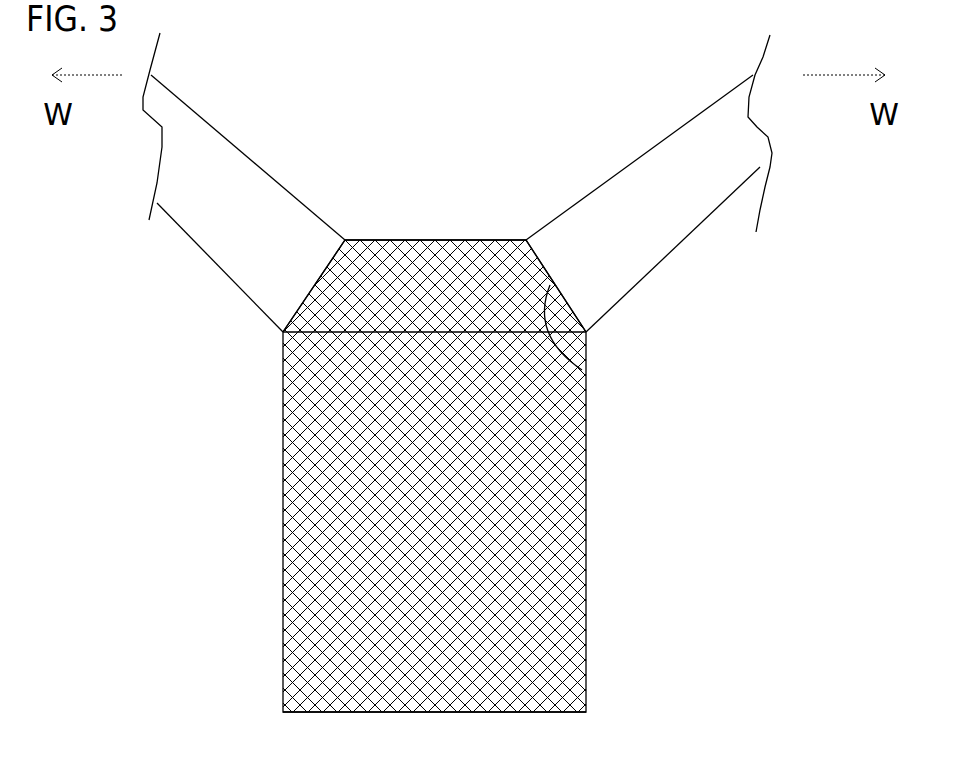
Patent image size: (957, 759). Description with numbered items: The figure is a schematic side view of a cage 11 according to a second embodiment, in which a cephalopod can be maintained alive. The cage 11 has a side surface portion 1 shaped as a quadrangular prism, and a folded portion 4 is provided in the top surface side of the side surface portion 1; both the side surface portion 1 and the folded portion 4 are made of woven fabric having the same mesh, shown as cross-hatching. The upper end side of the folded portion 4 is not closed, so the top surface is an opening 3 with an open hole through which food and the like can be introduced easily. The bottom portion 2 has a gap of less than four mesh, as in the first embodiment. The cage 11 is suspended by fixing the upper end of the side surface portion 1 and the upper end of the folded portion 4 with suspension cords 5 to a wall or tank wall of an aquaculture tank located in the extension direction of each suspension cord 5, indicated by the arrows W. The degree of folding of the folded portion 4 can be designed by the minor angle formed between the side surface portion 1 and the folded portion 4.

The side surface portion 1 is at (471, 476).
The bottom portion 2 is at (449, 733).
The opening 3 is at (400, 240).
The folded portion 4 is at (414, 276).
The suspension cord 5 is at (457, 191).
The cage 11 is at (457, 393).